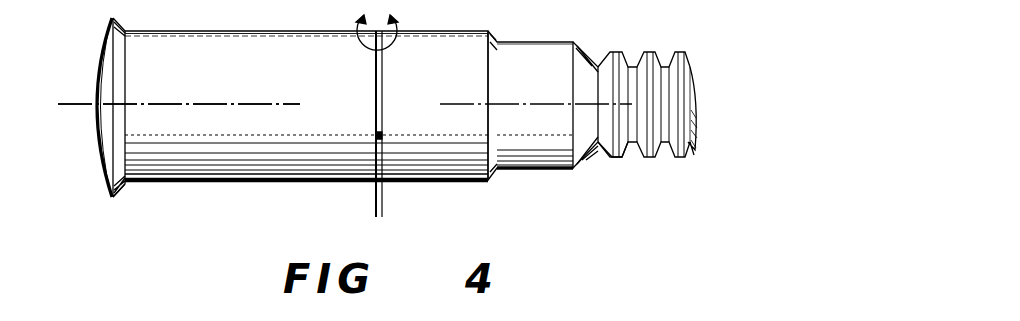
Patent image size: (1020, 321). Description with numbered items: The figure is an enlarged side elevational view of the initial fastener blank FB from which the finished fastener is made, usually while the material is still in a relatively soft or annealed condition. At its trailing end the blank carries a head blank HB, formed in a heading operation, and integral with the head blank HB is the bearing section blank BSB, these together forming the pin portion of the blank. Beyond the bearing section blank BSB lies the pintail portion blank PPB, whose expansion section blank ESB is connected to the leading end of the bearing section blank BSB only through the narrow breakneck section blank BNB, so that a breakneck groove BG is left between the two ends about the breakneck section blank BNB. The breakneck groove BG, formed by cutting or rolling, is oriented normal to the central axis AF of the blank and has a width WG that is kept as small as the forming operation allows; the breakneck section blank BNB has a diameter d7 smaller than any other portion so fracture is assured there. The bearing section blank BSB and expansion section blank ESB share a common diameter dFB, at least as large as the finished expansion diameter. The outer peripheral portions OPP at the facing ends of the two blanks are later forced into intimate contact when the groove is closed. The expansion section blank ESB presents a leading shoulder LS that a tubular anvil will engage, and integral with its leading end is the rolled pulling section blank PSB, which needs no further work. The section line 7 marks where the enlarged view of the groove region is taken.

The head blank HB is at (105, 126).
The fastener blank FB is at (106, 197).
The pulling section blank PSB is at (129, 190).
The bearing section blank BSB is at (248, 182).
The common diameter dFB is at (162, 178).
The central axis AF is at (198, 104).
The breakneck section blank BNB is at (376, 94).
The outer peripheral portions OPP is at (409, 142).
The breakneck groove BG is at (382, 62).
The section line for FIG. 7 is at (377, 12).
The breakneck section diameter d7 is at (385, 78).
The groove width WG is at (360, 207).
The expansion section blank ESB is at (441, 185).
The leading shoulder LS is at (495, 183).
The pintail portion blank PPB is at (576, 174).